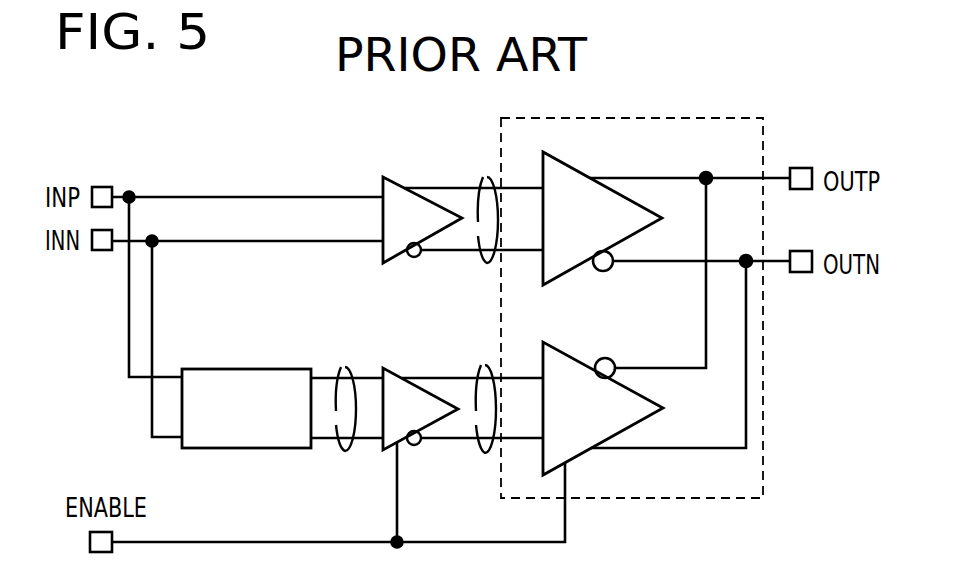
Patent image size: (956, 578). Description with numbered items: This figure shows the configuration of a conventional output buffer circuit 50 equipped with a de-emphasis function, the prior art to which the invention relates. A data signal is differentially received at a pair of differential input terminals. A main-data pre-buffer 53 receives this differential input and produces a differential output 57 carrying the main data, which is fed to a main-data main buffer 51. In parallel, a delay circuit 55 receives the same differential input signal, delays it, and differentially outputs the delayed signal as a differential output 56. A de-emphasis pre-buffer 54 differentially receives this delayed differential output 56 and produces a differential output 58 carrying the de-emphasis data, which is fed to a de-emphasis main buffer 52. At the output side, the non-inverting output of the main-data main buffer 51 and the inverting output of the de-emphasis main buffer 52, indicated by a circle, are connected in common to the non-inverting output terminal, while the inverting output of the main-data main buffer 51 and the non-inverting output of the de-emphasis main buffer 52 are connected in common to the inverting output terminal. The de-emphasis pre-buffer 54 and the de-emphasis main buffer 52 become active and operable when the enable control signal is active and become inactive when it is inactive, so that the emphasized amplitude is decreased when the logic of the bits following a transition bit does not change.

The output stage 50 is at (765, 120).
The main-data main buffer 51 is at (580, 172).
The de-emphasis main buffer 52 is at (583, 362).
The main-data pre-buffer 53 is at (395, 183).
The de-emphasis pre-buffer 54 is at (395, 374).
The delay circuit 55 is at (233, 369).
The differential output 56 is at (345, 367).
The differential output (main-data) 57 is at (485, 177).
The differential output (de-emphasis data) 58 is at (483, 453).